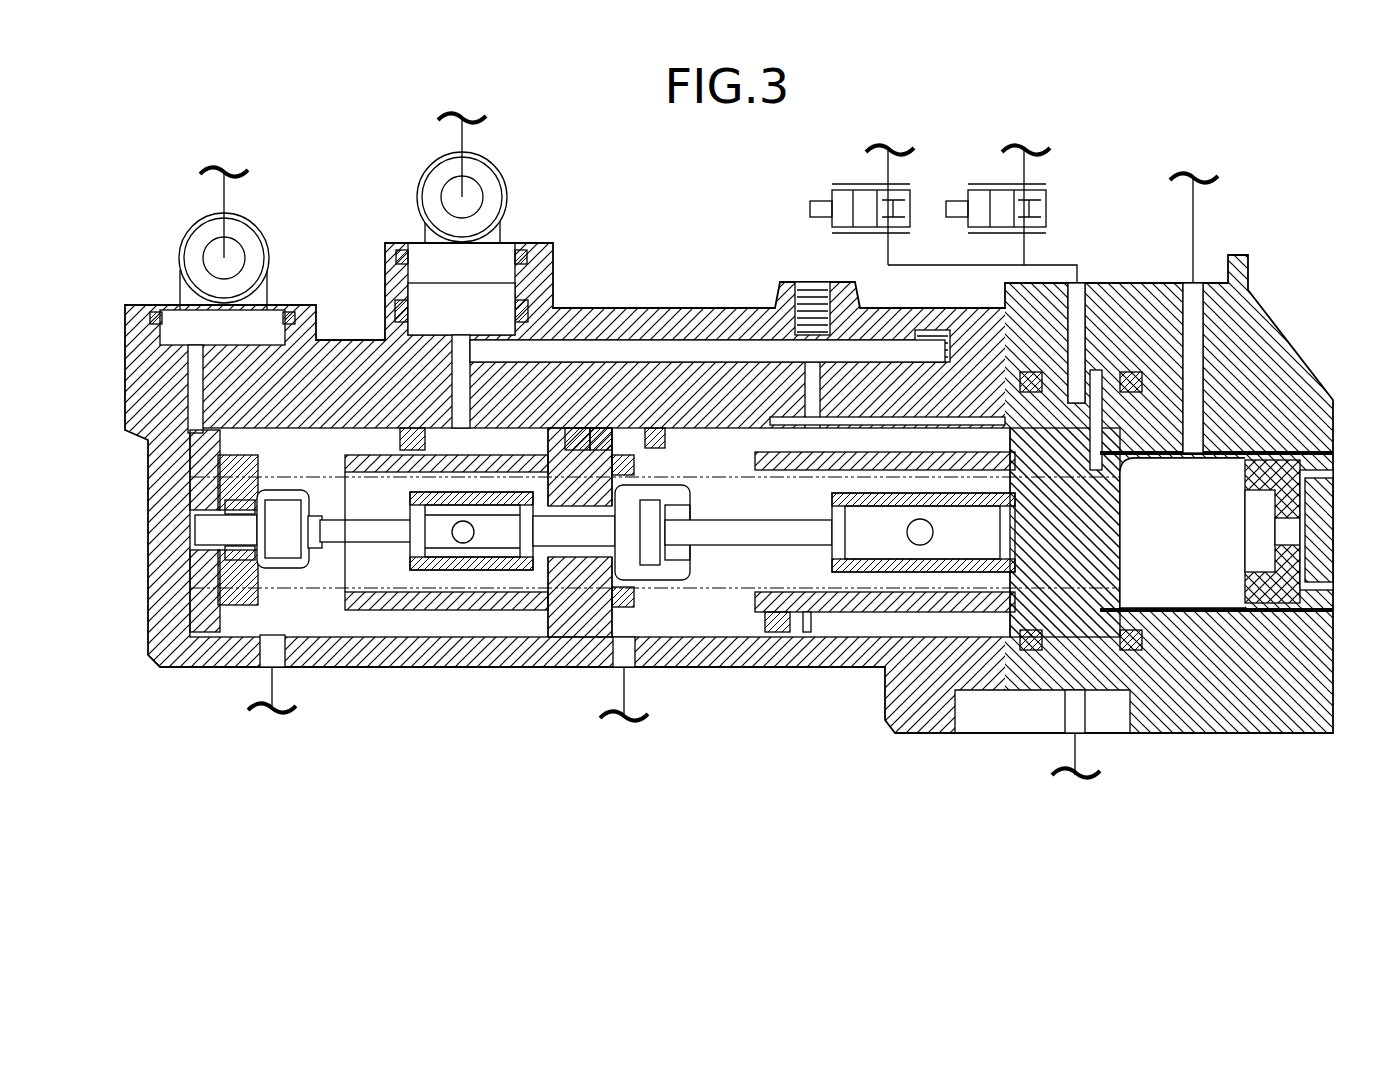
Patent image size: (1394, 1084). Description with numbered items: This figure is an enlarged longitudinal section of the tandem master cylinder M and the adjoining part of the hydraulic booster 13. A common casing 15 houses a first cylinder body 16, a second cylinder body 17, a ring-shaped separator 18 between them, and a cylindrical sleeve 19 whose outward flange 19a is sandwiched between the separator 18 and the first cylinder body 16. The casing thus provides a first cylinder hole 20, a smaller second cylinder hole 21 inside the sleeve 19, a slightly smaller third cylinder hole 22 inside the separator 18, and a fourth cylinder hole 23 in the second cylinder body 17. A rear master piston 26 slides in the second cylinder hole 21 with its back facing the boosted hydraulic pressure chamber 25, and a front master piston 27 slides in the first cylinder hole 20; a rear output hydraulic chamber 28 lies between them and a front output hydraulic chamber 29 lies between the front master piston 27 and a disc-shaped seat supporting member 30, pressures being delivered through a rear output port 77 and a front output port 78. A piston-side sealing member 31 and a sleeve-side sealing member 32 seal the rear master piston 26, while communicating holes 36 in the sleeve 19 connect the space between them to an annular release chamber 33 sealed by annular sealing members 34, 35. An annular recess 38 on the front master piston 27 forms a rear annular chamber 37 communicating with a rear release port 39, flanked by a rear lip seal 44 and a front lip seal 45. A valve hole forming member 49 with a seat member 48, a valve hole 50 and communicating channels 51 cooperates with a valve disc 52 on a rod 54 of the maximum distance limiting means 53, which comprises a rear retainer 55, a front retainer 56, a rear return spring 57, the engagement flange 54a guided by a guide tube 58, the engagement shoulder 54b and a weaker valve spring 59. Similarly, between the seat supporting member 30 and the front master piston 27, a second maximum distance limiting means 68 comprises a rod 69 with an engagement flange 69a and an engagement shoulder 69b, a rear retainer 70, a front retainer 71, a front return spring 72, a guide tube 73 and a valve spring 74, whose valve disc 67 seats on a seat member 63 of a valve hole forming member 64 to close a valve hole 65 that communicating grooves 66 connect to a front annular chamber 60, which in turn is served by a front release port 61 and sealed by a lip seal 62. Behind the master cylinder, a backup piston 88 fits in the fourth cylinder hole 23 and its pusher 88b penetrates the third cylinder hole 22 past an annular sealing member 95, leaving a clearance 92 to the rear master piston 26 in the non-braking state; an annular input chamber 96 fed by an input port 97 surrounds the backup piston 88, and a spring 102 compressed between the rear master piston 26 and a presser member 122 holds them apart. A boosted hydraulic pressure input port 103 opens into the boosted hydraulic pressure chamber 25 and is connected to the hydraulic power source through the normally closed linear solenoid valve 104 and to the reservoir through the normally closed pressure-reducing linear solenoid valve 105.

The tandem master cylinder M is at (138, 300).
The hydraulic booster 13 is at (1228, 452).
The casing 15 is at (684, 305).
The first cylinder body 16 is at (611, 320).
The second cylinder body 17 is at (1143, 300).
The separator 18 is at (1180, 600).
The sleeve 19 is at (875, 625).
The outward flange 19a is at (1100, 330).
The first cylinder hole 20 is at (290, 655).
The second cylinder hole 21 is at (736, 600).
The third cylinder hole 22 is at (1240, 600).
The fourth cylinder hole 23 is at (1322, 452).
The boosted hydraulic pressure chamber 25 is at (1182, 533).
The rear master piston 26 is at (890, 685).
The front master piston 27 is at (417, 605).
The rear output hydraulic chamber 28 is at (736, 468).
The front output hydraulic chamber 29 is at (345, 640).
The seat supporting member 30 is at (215, 640).
The piston-side sealing member 31 is at (1045, 700).
The sleeve-side sealing member 32 is at (776, 633).
The annular release chamber 33 is at (892, 350).
The annular sealing member 34 is at (654, 428).
The annular sealing member 35 is at (990, 692).
The communicating holes 36 is at (808, 635).
The rear annular chamber 37 is at (505, 625).
The annular recess 38 is at (560, 620).
The rear release port 39 is at (478, 340).
The rear lip seal 44 is at (597, 640).
The front lip seal 45 is at (410, 440).
The seat member 48 is at (597, 428).
The valve hole forming member 49 is at (575, 525).
The valve hole 50 is at (660, 520).
The communicating channels 51 is at (545, 600).
The valve disc 52 is at (650, 620).
The maximum distance limiting means 53 is at (958, 468).
The rod 54 is at (745, 527).
The engagement flange 54a is at (862, 308).
The engagement shoulder 54b is at (665, 530).
The rear retainer 55 is at (930, 605).
The front retainer 56 is at (660, 530).
The rear return spring 57 is at (940, 565).
The guide tube 58 is at (1095, 512).
The valve spring 59 is at (688, 612).
The front annular chamber 60 is at (155, 660).
The front release port 61 is at (190, 412).
The lip seal 62 is at (245, 625).
The seat member 63 is at (335, 568).
The valve hole forming member 64 is at (240, 560).
The valve hole 65 is at (232, 530).
The communicating grooves 66 is at (190, 490).
The valve disc 67 is at (280, 500).
The maximum distance limiting means 68 is at (372, 590).
The rod 69 is at (356, 542).
The engagement flange 69a is at (430, 505).
The engagement shoulder 69b is at (348, 345).
The rear retainer 70 is at (458, 600).
The front retainer 71 is at (328, 340).
The front return spring 72 is at (258, 488).
The guide tube 73 is at (486, 570).
The valve spring 74 is at (310, 552).
The rear output port 77 is at (627, 660).
The front output port 78 is at (272, 692).
The backup piston 88 is at (1315, 620).
The pusher 88b is at (1275, 740).
The clearance 92 is at (1106, 720).
The annular sealing member 95 is at (1135, 605).
The input chamber 96 is at (1245, 340).
The input port 97 is at (1200, 300).
The spring 102 is at (1238, 472).
The boosted hydraulic pressure input port 103 is at (1082, 300).
The normally closed linear solenoid valve 104 is at (1048, 190).
The normally closed pressure-reducing linear solenoid valve 105 is at (855, 188).
The presser member 122 is at (1240, 470).